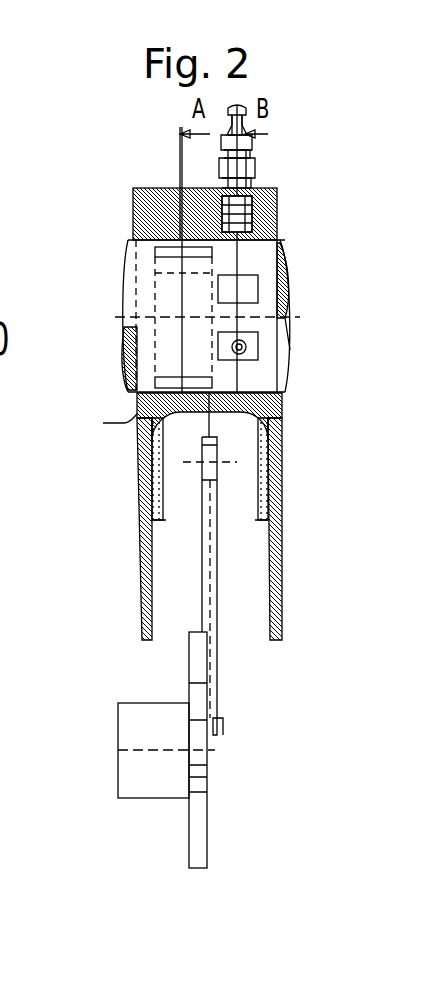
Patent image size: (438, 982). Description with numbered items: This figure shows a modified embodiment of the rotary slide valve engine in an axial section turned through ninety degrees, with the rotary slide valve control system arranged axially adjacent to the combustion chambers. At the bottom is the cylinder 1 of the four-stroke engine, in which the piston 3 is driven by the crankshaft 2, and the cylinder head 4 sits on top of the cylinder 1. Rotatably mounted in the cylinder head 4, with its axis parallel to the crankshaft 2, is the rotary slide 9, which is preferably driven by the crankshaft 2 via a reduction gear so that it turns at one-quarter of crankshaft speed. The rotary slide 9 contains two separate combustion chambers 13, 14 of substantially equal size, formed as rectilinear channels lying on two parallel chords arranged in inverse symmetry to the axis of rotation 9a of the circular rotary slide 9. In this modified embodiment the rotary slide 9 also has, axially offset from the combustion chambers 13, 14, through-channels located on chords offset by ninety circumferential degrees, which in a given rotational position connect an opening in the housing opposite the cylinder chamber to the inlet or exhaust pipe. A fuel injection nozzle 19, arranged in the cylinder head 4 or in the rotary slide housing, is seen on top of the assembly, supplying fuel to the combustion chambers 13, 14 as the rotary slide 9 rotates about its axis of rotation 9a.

The cylinder 1 is at (282, 568).
The crankshaft 2 is at (207, 755).
The piston 3 is at (280, 422).
The cylinder head 4 is at (142, 217).
The rotary slide 9 is at (252, 258).
The axis of rotation 9a is at (300, 318).
The combustion chamber 13 is at (248, 350).
The combustion chamber 14 is at (243, 292).
The fuel injection nozzle 19 is at (255, 165).